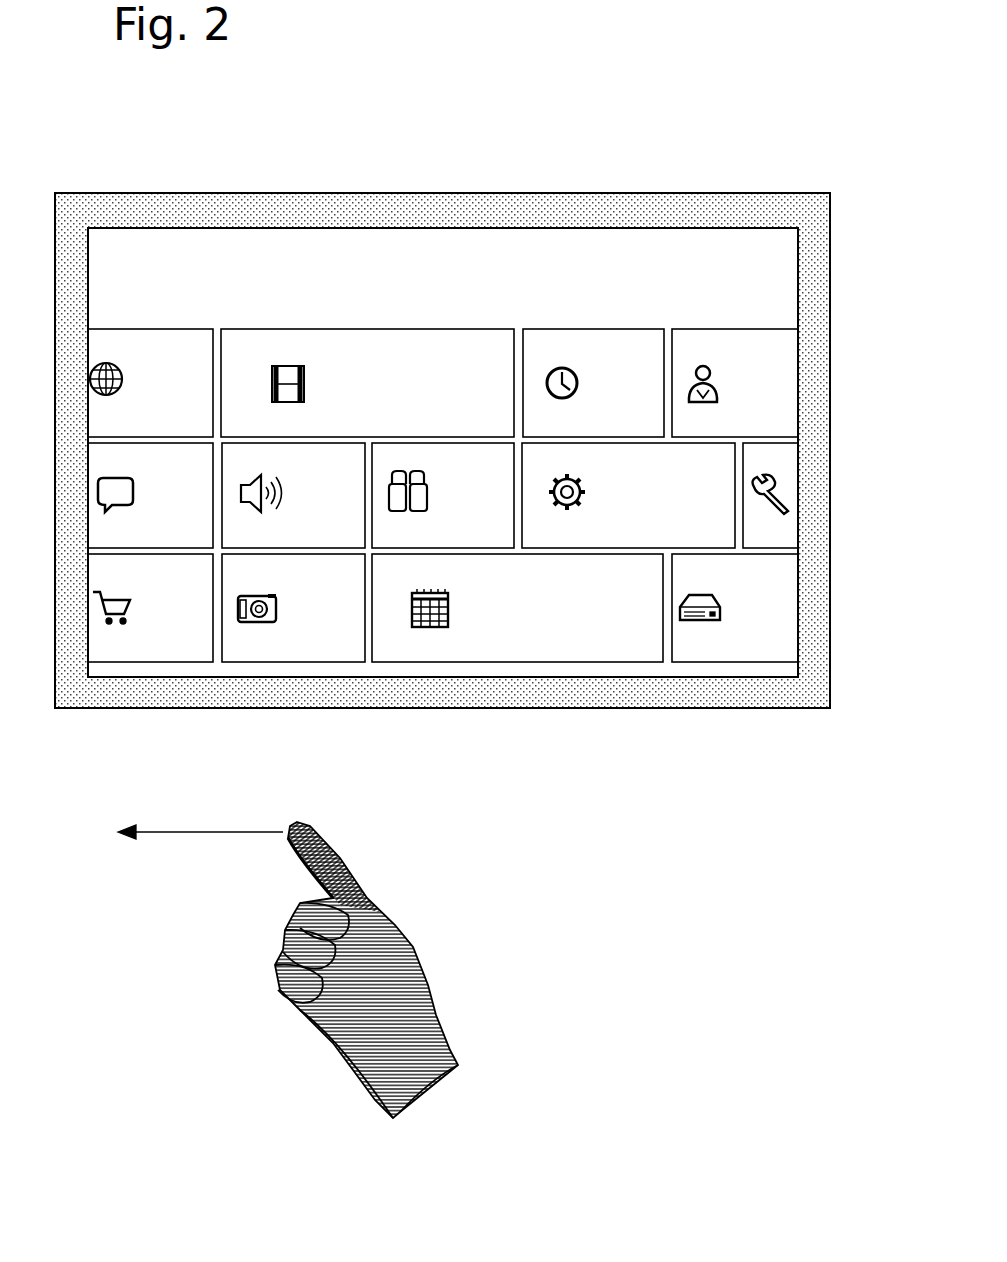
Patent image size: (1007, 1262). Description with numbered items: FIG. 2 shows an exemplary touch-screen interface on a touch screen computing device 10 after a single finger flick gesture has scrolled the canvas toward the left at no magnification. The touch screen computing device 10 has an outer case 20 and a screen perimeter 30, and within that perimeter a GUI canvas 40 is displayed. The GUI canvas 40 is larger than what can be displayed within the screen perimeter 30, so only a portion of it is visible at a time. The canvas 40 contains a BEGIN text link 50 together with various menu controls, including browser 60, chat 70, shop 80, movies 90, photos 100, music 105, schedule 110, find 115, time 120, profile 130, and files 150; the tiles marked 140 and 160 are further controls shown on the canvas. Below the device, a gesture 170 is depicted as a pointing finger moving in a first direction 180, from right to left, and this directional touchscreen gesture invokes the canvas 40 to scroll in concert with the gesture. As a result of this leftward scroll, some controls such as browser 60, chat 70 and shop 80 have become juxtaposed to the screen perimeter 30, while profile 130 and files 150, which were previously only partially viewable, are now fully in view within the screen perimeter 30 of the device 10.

The touch screen computing device 10 is at (443, 149).
The outer case 20 is at (590, 192).
The screen perimeter 30 is at (210, 228).
The GUI canvas 40 is at (479, 279).
The BEGIN text link 50 is at (167, 250).
The browser 60 is at (143, 329).
The chat 70 is at (87, 467).
The shop 80 is at (87, 643).
The movies 90 is at (285, 328).
The photos 100 is at (268, 662).
The music 105 is at (327, 542).
The schedule 110 is at (426, 662).
The find 115 is at (477, 542).
The time 120 is at (537, 328).
The profile 130 is at (706, 328).
The My Settings icon 140 is at (667, 542).
The files 150 is at (695, 662).
The Tools icon 160 is at (798, 467).
The gesture 170 is at (418, 952).
The first direction 180 is at (190, 832).